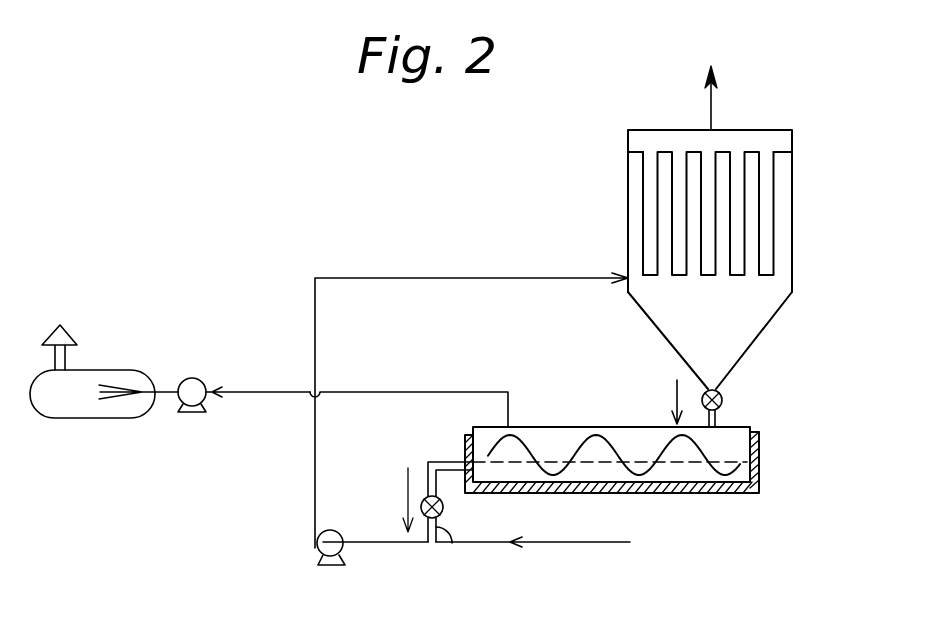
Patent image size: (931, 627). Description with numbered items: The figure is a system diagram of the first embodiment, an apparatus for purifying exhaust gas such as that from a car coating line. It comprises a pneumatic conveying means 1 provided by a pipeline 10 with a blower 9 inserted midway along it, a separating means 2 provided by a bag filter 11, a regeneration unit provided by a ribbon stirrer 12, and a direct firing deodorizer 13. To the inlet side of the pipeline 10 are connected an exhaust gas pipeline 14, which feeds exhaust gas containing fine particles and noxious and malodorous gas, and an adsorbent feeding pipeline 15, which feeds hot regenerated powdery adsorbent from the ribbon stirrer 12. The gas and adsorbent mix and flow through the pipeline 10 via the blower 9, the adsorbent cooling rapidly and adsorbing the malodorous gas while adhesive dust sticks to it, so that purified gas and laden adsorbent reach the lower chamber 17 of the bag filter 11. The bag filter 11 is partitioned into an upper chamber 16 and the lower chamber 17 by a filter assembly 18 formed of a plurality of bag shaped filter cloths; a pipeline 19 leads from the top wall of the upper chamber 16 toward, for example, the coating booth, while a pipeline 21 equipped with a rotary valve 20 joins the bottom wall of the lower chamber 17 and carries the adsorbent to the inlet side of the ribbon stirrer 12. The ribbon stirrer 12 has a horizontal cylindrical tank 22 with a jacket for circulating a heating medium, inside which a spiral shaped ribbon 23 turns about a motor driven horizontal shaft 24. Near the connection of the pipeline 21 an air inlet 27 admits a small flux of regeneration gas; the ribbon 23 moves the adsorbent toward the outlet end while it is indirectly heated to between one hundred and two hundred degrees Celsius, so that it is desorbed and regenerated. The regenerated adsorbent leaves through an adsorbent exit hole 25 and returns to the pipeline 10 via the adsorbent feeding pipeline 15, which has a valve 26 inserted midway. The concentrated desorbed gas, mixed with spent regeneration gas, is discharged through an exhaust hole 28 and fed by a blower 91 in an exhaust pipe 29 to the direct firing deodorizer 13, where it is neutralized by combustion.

The pneumatic conveying means 1 is at (305, 496).
The separating means 2 is at (750, 125).
The blower 9 is at (318, 548).
The pipeline 10 is at (367, 546).
The bag filter 11 is at (763, 198).
The ribbon stirrer 12 is at (732, 499).
The direct firing deodorizer 13 is at (97, 419).
The exhaust gas pipeline 14 is at (485, 546).
The adsorbent feeding pipeline 15 is at (453, 544).
The upper chamber 16 is at (638, 138).
The lower chamber 17 is at (743, 332).
The filter assembly 18 is at (645, 197).
The pipeline 19 is at (708, 102).
The rotary valve 20 is at (722, 398).
The pipeline 21 is at (717, 417).
The horizontal cylindrical tank 22 is at (753, 455).
The spiral shaped ribbon 23 is at (572, 437).
The horizontal shaft 24 is at (590, 462).
The adsorbent exit hole 25 is at (465, 460).
The valve 26 is at (427, 497).
The air inlet 27 is at (672, 423).
The exhaust hole 28 is at (508, 426).
The exhaust pipe 29 is at (247, 392).
The blower 91 is at (187, 378).